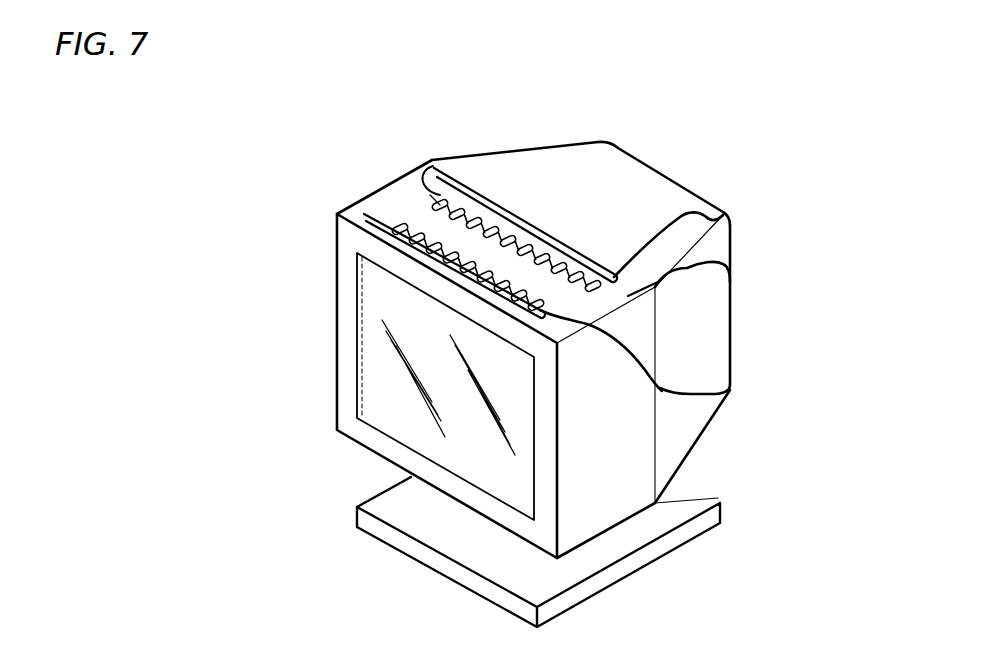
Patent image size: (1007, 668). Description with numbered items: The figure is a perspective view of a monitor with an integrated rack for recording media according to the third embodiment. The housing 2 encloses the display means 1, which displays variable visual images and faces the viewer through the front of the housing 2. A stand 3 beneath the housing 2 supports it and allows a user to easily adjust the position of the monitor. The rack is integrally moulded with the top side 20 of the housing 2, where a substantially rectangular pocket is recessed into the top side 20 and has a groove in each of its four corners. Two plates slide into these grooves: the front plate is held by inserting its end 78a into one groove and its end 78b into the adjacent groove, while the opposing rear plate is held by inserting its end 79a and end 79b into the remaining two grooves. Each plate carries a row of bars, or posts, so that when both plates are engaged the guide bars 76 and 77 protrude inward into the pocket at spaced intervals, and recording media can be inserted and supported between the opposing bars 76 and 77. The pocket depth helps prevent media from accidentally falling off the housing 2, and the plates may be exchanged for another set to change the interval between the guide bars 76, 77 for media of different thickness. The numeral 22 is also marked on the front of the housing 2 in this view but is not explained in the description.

The display means 1 is at (367, 360).
The housing 2 is at (730, 345).
The stand 3 is at (690, 507).
The top side 20 is at (730, 283).
The front cabinet 22 is at (343, 430).
The guide bar 76 is at (386, 222).
The guide bar 77 is at (433, 167).
The end of plate 78 78a is at (343, 206).
The end of plate 78 78b is at (733, 391).
The end of plate 79 79a is at (438, 180).
The end of plate 79 79b is at (723, 213).